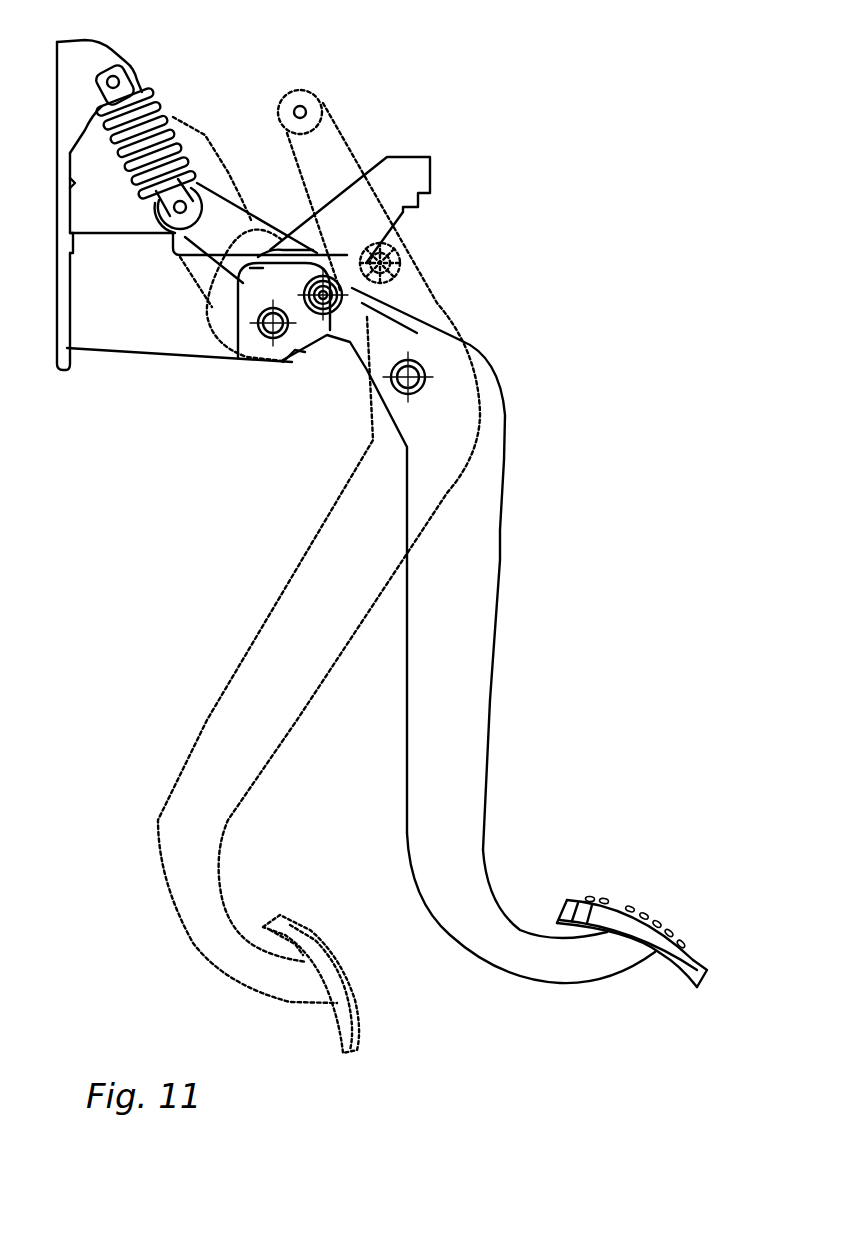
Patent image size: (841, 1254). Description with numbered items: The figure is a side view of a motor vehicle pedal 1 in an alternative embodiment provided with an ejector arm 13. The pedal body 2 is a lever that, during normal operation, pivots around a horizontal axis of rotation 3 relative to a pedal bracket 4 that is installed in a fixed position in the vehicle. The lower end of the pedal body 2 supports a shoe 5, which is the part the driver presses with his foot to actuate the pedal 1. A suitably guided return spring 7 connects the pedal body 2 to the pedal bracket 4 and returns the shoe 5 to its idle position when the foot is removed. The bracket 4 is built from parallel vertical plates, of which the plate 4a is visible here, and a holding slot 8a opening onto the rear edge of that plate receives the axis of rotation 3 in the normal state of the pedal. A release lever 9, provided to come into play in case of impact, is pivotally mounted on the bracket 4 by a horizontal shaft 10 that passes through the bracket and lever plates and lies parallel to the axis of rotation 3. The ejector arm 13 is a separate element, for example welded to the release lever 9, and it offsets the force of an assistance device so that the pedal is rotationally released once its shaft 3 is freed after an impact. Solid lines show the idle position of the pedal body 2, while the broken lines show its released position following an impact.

The motor vehicle pedal 1 is at (535, 572).
The pedal body 2 is at (230, 694).
The axis of rotation 3 is at (395, 254).
The pedal bracket 4 is at (147, 352).
The vertical plate 4a is at (183, 342).
The shoe 5 is at (687, 950).
The return spring 7 is at (167, 108).
The holding slot 8a is at (370, 300).
The release lever 9 is at (200, 130).
The horizontal shaft 10 is at (270, 340).
The ejector arm 13 is at (285, 251).